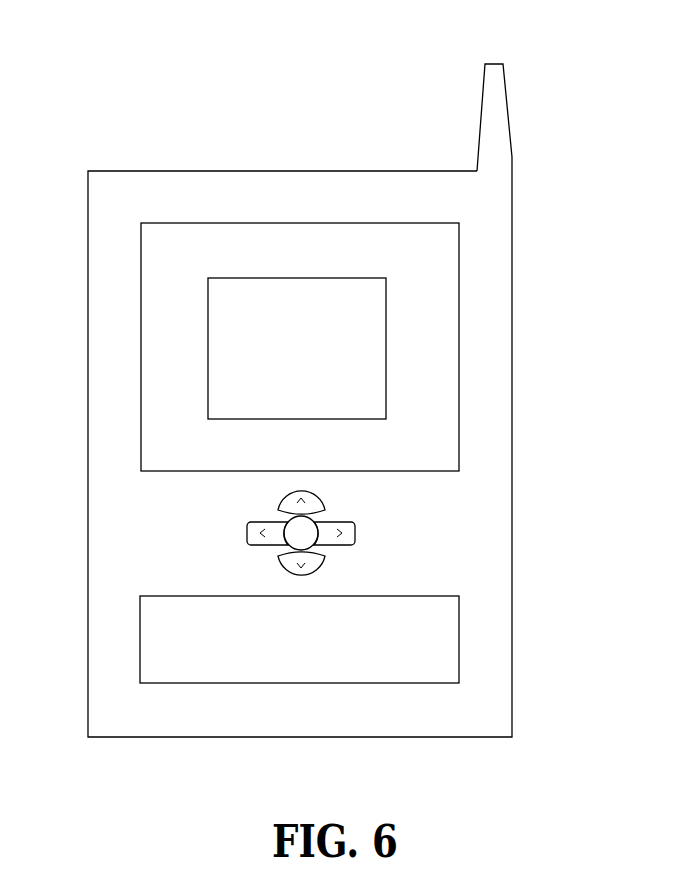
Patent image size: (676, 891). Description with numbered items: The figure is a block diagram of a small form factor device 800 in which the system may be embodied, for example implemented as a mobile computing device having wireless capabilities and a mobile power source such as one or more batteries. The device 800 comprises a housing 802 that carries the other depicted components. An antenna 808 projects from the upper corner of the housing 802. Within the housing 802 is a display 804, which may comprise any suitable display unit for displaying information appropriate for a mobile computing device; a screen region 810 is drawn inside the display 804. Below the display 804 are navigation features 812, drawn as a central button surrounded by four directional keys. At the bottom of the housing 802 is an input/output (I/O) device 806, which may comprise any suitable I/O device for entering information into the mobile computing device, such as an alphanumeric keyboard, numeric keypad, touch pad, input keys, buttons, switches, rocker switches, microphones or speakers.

The small form factor device 800 is at (93, 71).
The housing 802 is at (512, 454).
The display 804 is at (459, 242).
The input/output (I/O) device 806 is at (459, 630).
The antenna 808 is at (477, 111).
The display screen 810 is at (386, 366).
The navigation features 812 is at (385, 522).